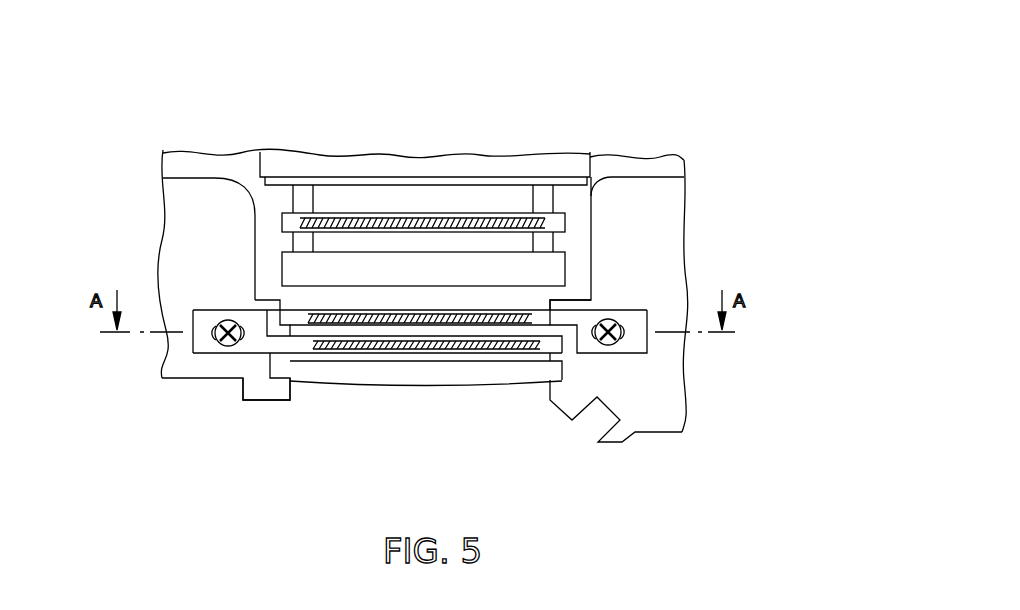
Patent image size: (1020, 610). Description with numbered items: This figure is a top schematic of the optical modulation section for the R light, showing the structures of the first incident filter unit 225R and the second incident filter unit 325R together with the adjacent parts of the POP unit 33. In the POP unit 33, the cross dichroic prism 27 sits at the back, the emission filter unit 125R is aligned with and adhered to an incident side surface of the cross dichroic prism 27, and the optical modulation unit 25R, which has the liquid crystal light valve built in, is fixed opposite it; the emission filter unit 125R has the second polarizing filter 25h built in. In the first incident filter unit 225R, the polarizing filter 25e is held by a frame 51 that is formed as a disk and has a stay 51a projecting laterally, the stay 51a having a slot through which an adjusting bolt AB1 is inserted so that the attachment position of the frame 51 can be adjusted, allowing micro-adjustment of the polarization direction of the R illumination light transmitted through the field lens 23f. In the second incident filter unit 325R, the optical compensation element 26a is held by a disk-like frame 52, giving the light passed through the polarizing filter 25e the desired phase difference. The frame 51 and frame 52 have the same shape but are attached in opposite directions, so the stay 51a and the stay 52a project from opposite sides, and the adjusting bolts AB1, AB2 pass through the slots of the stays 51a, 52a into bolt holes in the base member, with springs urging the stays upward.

The POP unit 33 is at (601, 176).
The cross dichroic prism 27 is at (522, 162).
The second polarizing filter 25h is at (435, 222).
The emission filter unit 125R is at (570, 206).
The optical modulation unit 25R is at (553, 267).
The second incident filter unit 325R is at (617, 296).
The stay 52a is at (640, 312).
The adjusting bolt AB2 is at (613, 347).
The frame 52 is at (302, 312).
The optical compensation element 26a is at (443, 320).
The polarizing filter 25e is at (472, 345).
The frame 51 is at (540, 346).
The stay 51a is at (205, 312).
The adjusting bolt AB1 is at (224, 347).
The first incident filter unit 225R is at (261, 364).
The field lens 23f is at (344, 370).